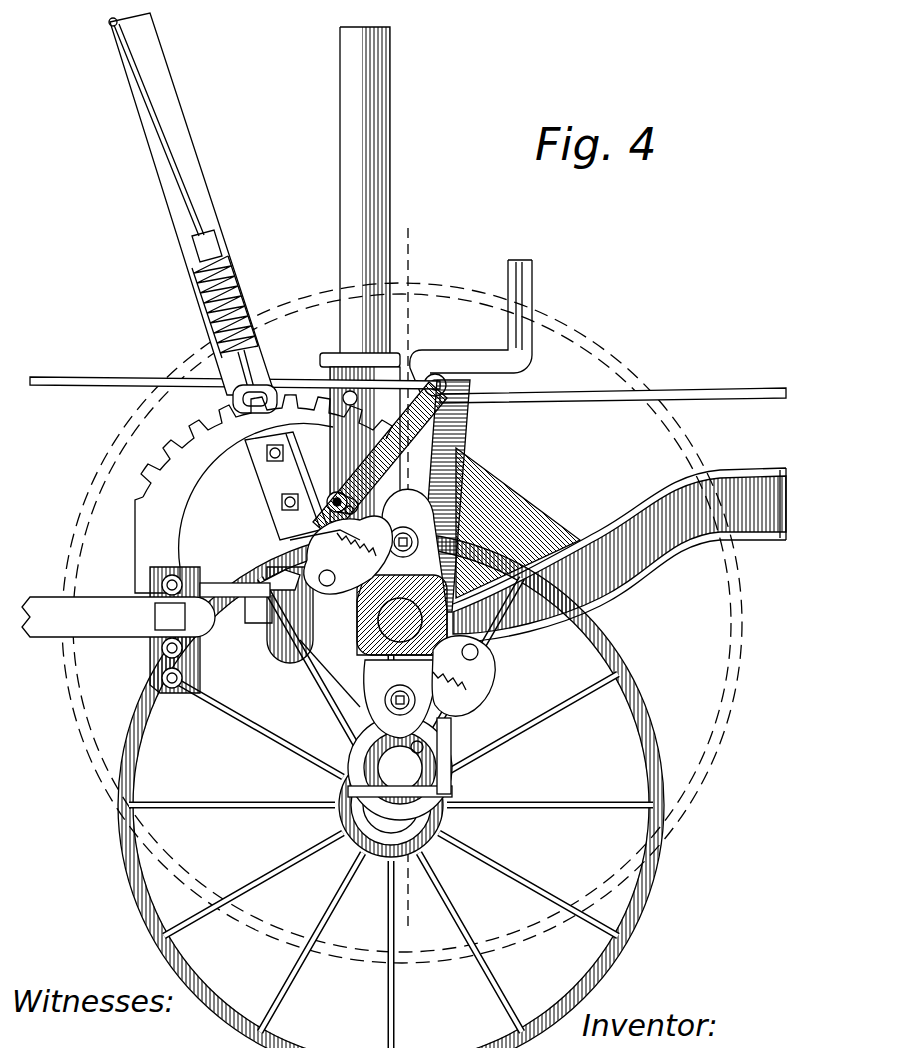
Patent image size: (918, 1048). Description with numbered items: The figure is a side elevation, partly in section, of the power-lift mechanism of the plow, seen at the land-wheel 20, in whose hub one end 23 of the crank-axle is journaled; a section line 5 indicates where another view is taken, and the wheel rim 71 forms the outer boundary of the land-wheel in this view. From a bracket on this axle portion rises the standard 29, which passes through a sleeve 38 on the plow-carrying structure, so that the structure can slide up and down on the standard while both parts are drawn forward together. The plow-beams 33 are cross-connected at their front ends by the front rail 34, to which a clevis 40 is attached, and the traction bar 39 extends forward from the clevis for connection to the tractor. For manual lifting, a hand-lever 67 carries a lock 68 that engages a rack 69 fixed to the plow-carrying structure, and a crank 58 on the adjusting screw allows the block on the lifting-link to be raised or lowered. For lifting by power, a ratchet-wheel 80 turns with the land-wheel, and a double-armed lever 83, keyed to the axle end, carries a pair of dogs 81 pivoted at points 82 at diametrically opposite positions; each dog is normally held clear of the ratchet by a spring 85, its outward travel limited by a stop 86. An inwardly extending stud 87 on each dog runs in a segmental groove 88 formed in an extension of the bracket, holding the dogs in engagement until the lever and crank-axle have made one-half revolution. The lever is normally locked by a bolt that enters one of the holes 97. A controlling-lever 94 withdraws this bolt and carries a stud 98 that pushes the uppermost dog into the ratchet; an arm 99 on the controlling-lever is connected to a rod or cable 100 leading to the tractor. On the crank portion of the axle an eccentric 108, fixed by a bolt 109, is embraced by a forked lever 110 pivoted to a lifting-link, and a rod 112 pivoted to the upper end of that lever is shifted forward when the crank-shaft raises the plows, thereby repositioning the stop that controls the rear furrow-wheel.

The section line 5 is at (403, 575).
The land-wheel 20 is at (726, 726).
The end of crank-axle 23 is at (380, 622).
The standard 29 is at (392, 150).
The beam 33 is at (770, 528).
The front rail 34 is at (250, 626).
The sleeve 38 is at (365, 444).
The traction bar 39 is at (118, 639).
The clevis 40 is at (150, 664).
The crank 58 is at (471, 328).
The hand-lever 67 is at (190, 170).
The lock 68 is at (260, 394).
The rack 69 is at (263, 494).
The wheel 71 is at (664, 864).
The ratchet-wheel 80 is at (360, 672).
The dog 81 is at (497, 708).
The dog pivot 82 is at (416, 520).
The double-armed lever 83 is at (440, 566).
The spring 85 is at (502, 683).
The stop 86 is at (500, 526).
The stud 87 is at (290, 574).
The segmental groove 88 is at (342, 648).
The controlling-lever 94 is at (336, 528).
The hole 97 is at (408, 526).
The stud 98 is at (332, 500).
The arm 99 is at (380, 460).
The rod or cable 100 is at (122, 380).
The eccentric 108 is at (350, 790).
The bolt 109 is at (446, 738).
The lever 110 is at (468, 434).
The rod 112 is at (662, 392).